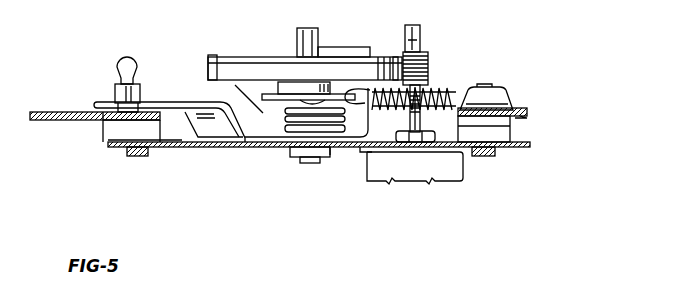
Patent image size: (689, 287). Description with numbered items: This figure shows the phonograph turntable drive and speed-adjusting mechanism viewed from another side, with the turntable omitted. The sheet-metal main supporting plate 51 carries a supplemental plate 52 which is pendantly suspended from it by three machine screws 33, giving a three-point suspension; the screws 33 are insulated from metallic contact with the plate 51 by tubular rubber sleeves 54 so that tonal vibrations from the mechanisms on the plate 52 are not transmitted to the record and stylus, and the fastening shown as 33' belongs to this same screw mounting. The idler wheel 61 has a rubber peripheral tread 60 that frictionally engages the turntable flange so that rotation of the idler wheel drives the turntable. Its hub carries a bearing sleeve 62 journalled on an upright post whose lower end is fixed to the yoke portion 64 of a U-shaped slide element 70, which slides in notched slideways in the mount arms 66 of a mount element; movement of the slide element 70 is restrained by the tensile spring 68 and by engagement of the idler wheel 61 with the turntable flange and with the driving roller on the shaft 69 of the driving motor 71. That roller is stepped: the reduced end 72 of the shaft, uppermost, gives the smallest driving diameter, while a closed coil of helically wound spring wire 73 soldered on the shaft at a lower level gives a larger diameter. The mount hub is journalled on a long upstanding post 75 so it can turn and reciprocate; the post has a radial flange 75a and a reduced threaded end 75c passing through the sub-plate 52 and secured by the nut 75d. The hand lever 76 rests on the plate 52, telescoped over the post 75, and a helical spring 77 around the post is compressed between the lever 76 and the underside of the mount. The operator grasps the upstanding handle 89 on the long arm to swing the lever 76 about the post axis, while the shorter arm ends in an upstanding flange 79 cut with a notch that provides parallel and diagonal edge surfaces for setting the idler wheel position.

The machine screws 33 is at (338, 126).
The nut 33' is at (314, 165).
The main supporting plate 51 is at (45, 122).
The supplemental plate 52 is at (188, 148).
The tubular rubber sleeves 54 is at (142, 120).
The rubber peripheral tread 60 is at (222, 66).
The idler wheel 61 is at (243, 55).
The bearing sleeve 62 is at (283, 105).
The yoke portion 64 is at (265, 105).
The mount arms 66 is at (260, 103).
The tensile spring 68 is at (449, 88).
The shaft of the driving motor 69 is at (367, 152).
The slide element 70 is at (262, 97).
The driving motor 71 is at (463, 178).
The reduced end of shaft 72 is at (421, 30).
The helically wound spring wire 73 is at (428, 56).
The upstanding post 75 is at (318, 33).
The radial flange 75a is at (292, 150).
The reduced threaded end 75c is at (320, 160).
The nut 75d is at (328, 150).
The hand lever 76 is at (182, 102).
The helical spring 77 is at (371, 142).
The upstanding flange 79 is at (362, 47).
The handle 89 is at (118, 90).